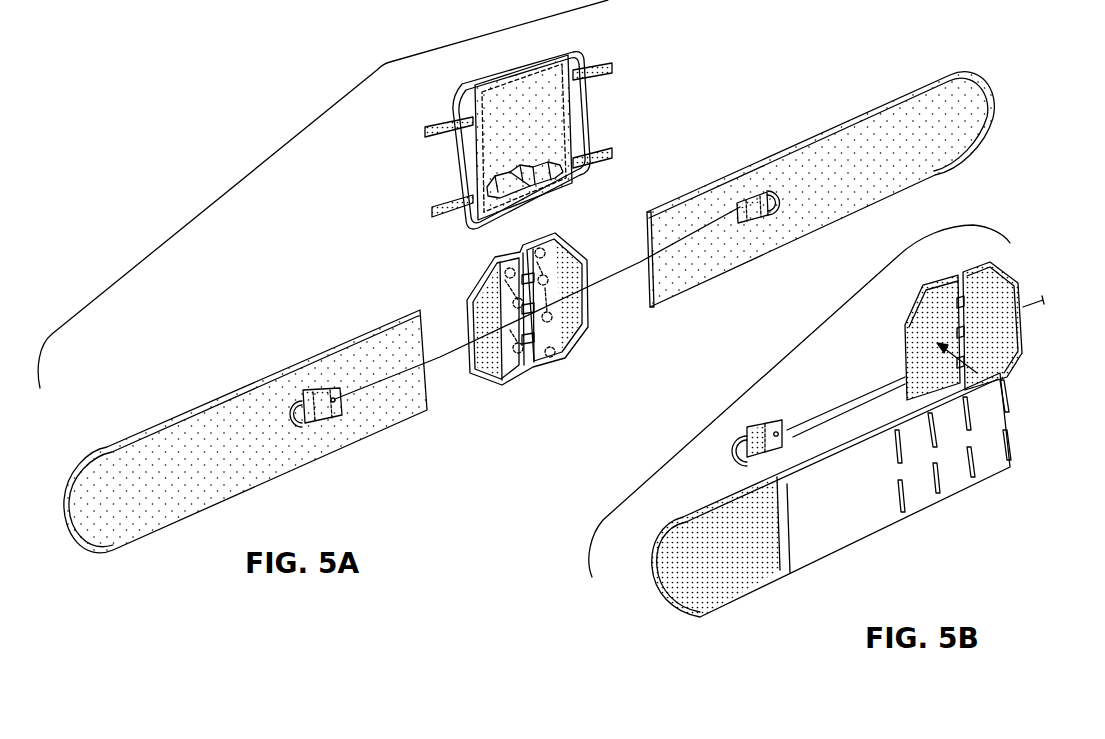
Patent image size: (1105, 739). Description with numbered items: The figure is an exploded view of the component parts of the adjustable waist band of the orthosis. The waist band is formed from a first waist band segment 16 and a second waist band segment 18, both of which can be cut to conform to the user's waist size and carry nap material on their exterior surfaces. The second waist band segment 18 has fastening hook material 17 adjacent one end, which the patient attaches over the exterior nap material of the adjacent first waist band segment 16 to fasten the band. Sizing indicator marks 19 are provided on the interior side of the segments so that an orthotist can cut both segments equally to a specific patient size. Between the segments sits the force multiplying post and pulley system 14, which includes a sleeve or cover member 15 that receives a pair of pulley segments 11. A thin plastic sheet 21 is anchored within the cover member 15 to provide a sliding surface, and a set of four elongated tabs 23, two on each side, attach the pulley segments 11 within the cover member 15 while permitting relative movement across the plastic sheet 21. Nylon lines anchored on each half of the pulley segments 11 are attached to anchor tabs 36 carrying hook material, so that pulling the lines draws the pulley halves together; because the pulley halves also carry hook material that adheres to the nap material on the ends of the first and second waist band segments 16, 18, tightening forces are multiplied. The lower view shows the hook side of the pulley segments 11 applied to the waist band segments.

In FIG. 5A, the pulley segments 11 is at (462, 281).
In FIG. 5B, the pulley segments 11 is at (1006, 265).
In FIG. 5A, the post and pulley system 14 is at (527, 127).
In FIG. 5A, the cover member 15 is at (560, 127).
In FIG. 5A, the first waist band segment 16 is at (282, 368).
In FIG. 5B, the fastening hook material 17 is at (714, 593).
In FIG. 5A, the second waist band segment 18 is at (778, 147).
In FIG. 5B, the second waist band segment 18 is at (862, 525).
In FIG. 5B, the sizing indicator marks 19 is at (905, 503).
In FIG. 5A, the thin plastic sheet 21 is at (468, 154).
In FIG. 5A, the elongated tabs 23 is at (597, 64).
In FIG. 5A, the anchor tabs 36 is at (320, 424).
In FIG. 5B, the anchor tabs 36 is at (755, 432).